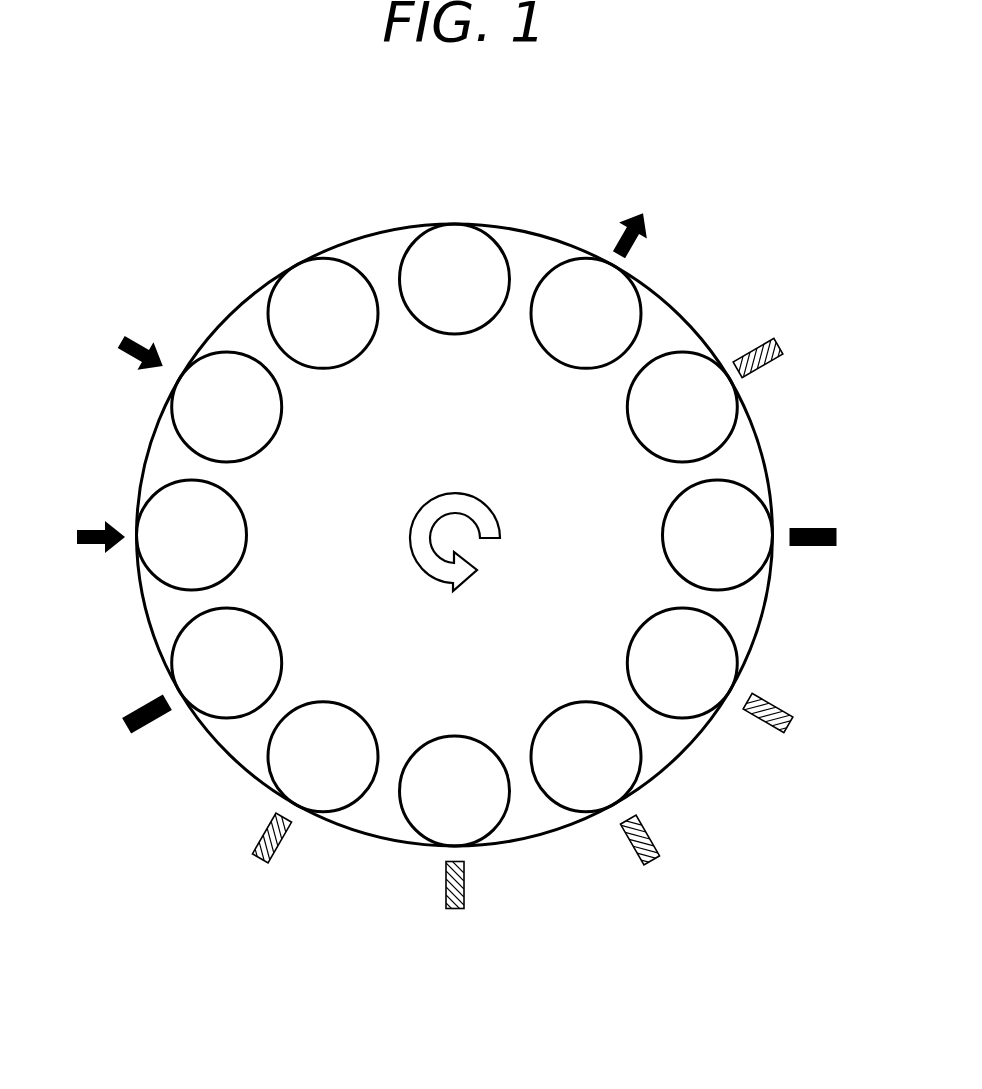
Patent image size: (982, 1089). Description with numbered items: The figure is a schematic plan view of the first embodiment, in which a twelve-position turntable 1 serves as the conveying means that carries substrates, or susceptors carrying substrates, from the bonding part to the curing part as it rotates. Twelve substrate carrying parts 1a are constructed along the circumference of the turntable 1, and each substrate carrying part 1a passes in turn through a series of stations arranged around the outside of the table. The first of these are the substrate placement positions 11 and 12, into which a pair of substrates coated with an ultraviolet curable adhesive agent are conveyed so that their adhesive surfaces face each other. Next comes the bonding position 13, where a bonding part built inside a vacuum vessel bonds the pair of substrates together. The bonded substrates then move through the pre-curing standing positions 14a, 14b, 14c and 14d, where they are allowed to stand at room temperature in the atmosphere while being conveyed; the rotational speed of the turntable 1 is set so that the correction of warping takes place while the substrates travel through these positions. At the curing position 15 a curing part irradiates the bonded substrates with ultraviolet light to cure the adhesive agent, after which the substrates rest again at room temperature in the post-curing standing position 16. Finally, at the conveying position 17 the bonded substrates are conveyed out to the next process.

The turntable 1 is at (388, 228).
The substrate carrying part 1a is at (312, 283).
The substrate placement position 11 is at (127, 349).
The substrate placement position 12 is at (80, 537).
The bonding position 13 is at (127, 718).
The pre-curing standing position 14a is at (258, 852).
The pre-curing standing position 14b is at (458, 901).
The pre-curing standing position 14c is at (660, 856).
The pre-curing standing position 14d is at (784, 729).
The curing position 15 is at (838, 538).
The post-curing standing position 16 is at (775, 353).
The conveying position 17 is at (635, 221).